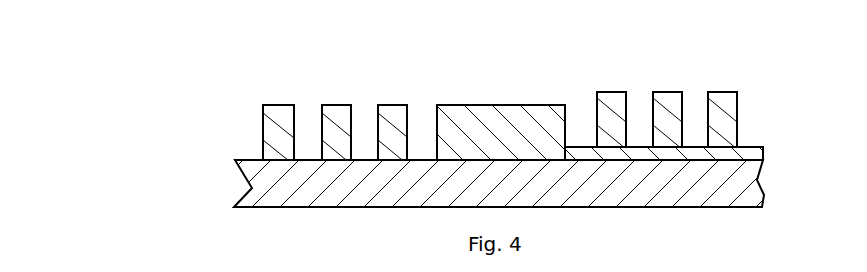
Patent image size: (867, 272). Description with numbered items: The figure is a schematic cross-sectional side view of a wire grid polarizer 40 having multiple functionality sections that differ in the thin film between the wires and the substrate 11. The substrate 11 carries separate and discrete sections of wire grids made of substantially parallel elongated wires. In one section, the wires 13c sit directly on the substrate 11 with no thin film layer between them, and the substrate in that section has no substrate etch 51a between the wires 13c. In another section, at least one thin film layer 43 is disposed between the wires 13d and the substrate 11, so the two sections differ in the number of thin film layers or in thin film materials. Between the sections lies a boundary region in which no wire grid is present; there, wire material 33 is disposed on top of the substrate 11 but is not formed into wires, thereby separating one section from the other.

The wire grid polarizer 40 is at (100, 154).
The substrate 11 is at (252, 195).
The thin film layer 43 is at (752, 153).
The wire material 33 is at (514, 112).
The wires 13c is at (263, 148).
The wires 13d is at (725, 120).
The no substrate etch 51a is at (417, 156).